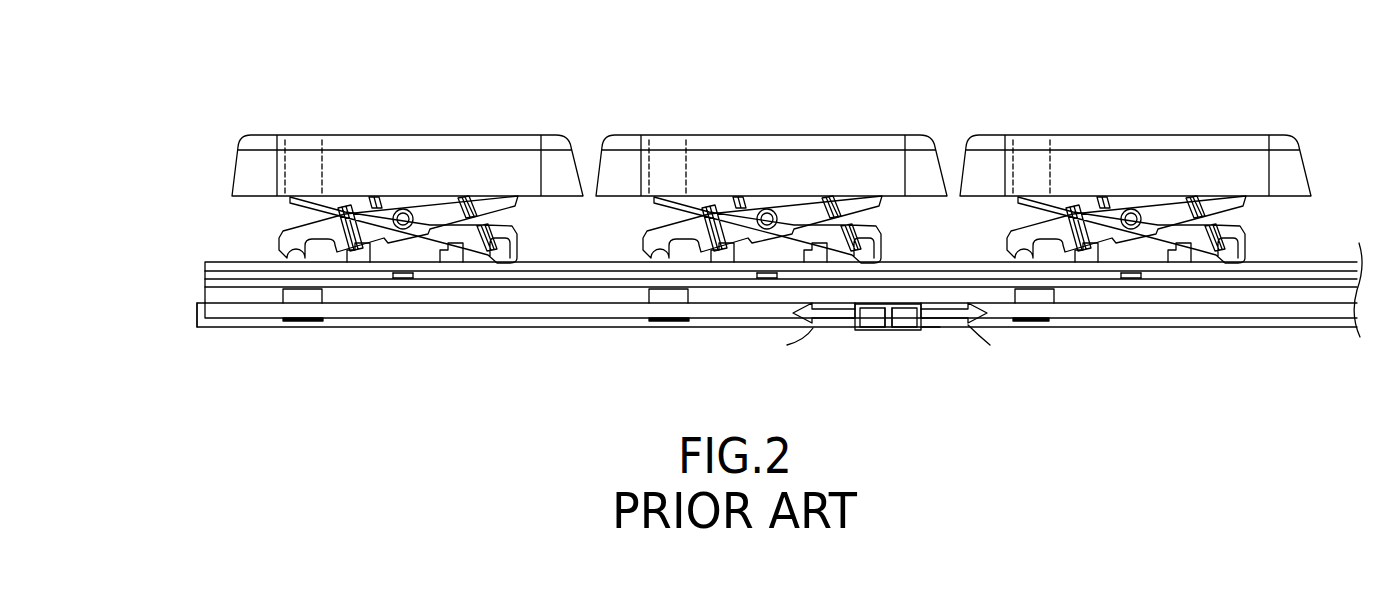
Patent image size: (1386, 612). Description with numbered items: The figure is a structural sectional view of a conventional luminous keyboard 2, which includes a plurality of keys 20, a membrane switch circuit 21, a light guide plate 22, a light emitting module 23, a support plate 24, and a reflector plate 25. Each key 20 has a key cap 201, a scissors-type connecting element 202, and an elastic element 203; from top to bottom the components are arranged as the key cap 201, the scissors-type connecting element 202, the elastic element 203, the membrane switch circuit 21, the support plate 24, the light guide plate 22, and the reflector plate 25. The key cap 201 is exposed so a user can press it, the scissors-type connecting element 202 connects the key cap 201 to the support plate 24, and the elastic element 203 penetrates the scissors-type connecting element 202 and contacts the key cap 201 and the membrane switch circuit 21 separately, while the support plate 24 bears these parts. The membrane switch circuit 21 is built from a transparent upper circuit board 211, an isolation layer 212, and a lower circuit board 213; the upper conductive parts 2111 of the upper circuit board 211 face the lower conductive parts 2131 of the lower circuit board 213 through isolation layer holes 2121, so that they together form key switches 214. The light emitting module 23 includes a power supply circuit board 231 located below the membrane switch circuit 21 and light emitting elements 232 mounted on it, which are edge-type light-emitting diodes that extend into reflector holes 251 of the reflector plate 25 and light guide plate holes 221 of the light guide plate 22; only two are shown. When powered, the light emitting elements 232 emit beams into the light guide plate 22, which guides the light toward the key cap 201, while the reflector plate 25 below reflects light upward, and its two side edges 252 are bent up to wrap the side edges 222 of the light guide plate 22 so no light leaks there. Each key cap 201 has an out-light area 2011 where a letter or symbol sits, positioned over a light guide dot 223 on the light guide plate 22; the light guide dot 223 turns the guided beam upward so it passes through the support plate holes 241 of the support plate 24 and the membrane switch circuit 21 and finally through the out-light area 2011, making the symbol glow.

The conventional luminous keyboard 2 is at (1141, 66).
The key 20 is at (530, 87).
The key cap 201 is at (468, 140).
The out-light area 2011 is at (304, 143).
The scissors-type connecting element 202 is at (427, 215).
The elastic element 203 is at (346, 211).
The membrane switch circuit 21 is at (143, 203).
The upper circuit board 211 is at (253, 262).
The isolation layer 212 is at (228, 272).
The lower circuit board 213 is at (232, 283).
The key switch 214 is at (512, 385).
The upper conductive part 2111 is at (393, 276).
The lower conductive part 2131 is at (413, 278).
The isolation layer hole 2121 is at (425, 278).
The support plate 24 is at (760, 296).
The support plate hole 241 is at (287, 290).
The light guide plate 22 is at (1157, 314).
The light guide plate hole 221 is at (927, 303).
The side edge of light guide plate 222 is at (207, 306).
The light guide dot 223 is at (1020, 320).
The light emitting module 23 is at (872, 290).
The power supply circuit board 231 is at (885, 322).
The light emitting element 232 is at (860, 320).
The reflector plate 25 is at (1243, 323).
The reflector hole 251 is at (935, 328).
The side edge of reflector plate 252 is at (197, 313).